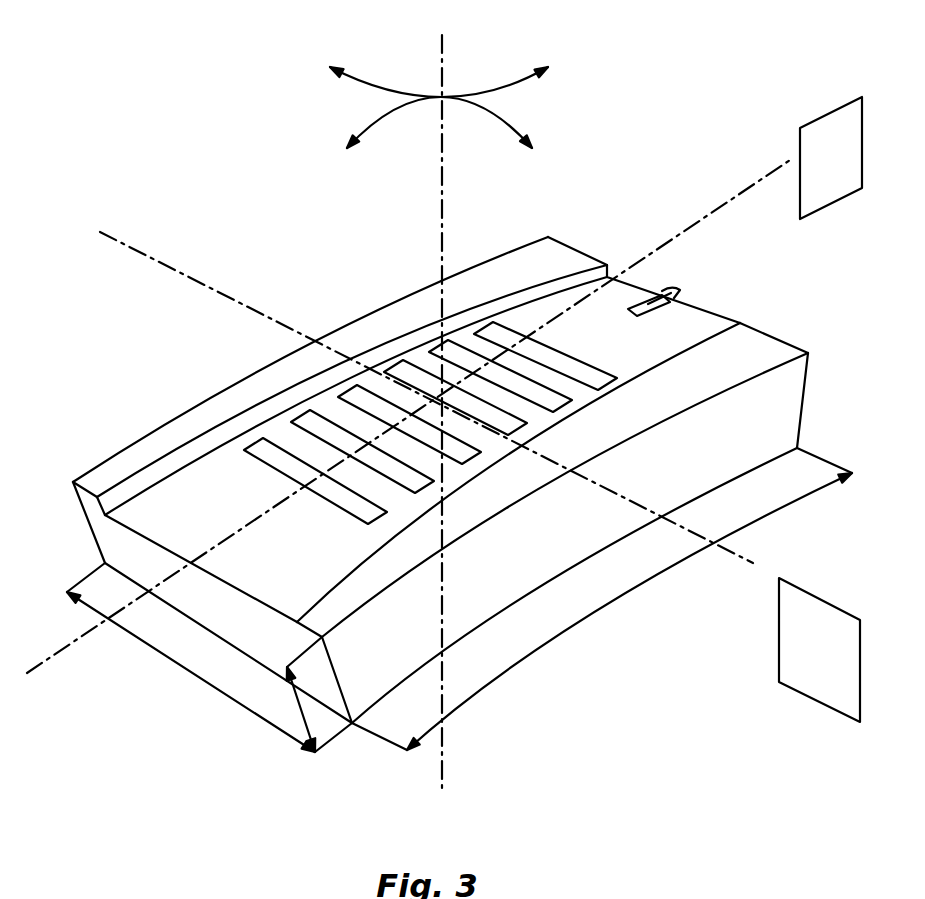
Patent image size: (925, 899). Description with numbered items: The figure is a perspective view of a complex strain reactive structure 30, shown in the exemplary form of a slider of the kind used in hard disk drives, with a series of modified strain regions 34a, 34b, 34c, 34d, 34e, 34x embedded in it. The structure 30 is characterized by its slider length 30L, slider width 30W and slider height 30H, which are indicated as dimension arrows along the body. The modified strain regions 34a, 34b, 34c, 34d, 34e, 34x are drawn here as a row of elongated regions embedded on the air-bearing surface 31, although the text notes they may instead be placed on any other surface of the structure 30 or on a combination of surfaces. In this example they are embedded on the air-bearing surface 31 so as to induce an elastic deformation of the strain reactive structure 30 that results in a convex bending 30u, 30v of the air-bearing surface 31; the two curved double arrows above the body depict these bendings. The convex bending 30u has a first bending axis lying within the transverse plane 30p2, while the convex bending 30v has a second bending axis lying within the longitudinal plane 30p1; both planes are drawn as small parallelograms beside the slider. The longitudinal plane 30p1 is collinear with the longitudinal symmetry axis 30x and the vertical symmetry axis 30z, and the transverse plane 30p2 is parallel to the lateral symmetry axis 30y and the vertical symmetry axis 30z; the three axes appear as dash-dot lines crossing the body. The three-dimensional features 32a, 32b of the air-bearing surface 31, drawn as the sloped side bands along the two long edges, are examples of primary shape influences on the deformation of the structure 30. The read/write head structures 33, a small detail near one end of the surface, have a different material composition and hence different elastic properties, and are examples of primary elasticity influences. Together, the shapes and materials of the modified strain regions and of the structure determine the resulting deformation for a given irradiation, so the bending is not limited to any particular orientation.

The strain reactive structure 30 is at (258, 650).
The air-bearing surface 31 is at (112, 512).
The three-dimensional feature 32a is at (107, 463).
The three-dimensional feature 32b is at (347, 602).
The read/write head structure 33 is at (670, 297).
The modified strain region 34a is at (245, 450).
The modified strain region 34b is at (292, 422).
The modified strain region 34c is at (340, 396).
The modified strain region 34d is at (386, 371).
The modified strain region 34e is at (433, 351).
The modified strain region 34x is at (478, 330).
The longitudinal plane 30p1 is at (832, 113).
The transverse plane 30p2 is at (823, 680).
The slider width 30W is at (167, 660).
The slider height 30H is at (300, 708).
The slider length 30L is at (565, 640).
The longitudinal symmetry axis 30x is at (702, 228).
The lateral symmetry axis 30y is at (745, 552).
The vertical symmetry axis 30z is at (443, 773).
The convex bending 30u is at (492, 80).
The convex bending 30v is at (512, 126).